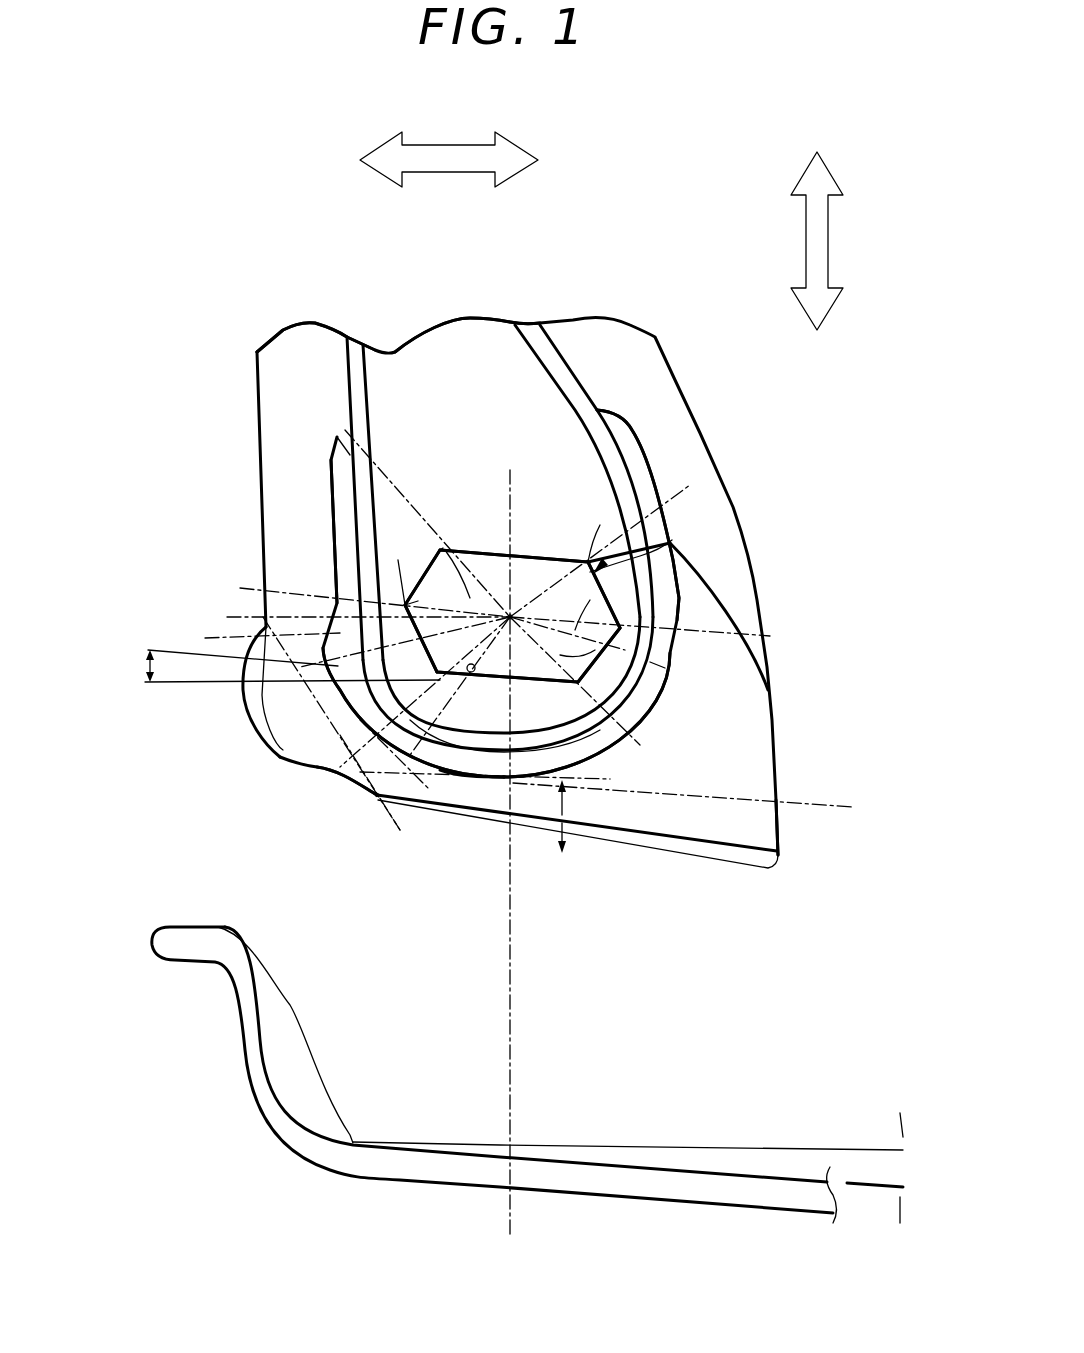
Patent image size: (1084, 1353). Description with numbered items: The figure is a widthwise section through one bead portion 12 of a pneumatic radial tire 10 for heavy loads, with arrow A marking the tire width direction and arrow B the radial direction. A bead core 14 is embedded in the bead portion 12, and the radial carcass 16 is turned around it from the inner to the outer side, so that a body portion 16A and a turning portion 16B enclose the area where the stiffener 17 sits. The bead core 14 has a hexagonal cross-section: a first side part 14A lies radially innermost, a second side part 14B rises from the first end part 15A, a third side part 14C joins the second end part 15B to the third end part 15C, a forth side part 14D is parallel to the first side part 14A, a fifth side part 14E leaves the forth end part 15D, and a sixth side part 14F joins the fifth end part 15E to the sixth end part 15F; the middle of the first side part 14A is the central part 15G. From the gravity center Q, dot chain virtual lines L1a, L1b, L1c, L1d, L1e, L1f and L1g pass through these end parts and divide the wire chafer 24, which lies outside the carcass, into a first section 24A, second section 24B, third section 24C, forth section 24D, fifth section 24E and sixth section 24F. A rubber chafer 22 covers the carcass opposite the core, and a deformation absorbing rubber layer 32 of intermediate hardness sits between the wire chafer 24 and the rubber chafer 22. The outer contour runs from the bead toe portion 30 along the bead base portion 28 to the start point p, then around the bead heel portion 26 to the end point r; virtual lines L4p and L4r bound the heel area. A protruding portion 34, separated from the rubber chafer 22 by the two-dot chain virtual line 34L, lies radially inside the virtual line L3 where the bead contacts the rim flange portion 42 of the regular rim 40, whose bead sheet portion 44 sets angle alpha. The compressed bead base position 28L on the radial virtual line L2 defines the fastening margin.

The pneumatic radial tire for heavy loads 10 is at (232, 306).
The bead portion 12 is at (315, 318).
The bead core 14 is at (558, 599).
The first side part 14A is at (508, 682).
The second side part 14B is at (425, 603).
The third side part 14C is at (438, 551).
The forth side part 14D is at (478, 548).
The fifth side part 14E is at (652, 690).
The sixth side part 14F is at (680, 548).
The first end part 15A is at (472, 558).
The second end part 15B is at (418, 601).
The third end part 15C is at (443, 546).
The forth end part 15D is at (580, 635).
The fifth end part 15E is at (660, 665).
The sixth end part 15F is at (590, 556).
The central part 15G is at (580, 660).
The radial carcass 16 is at (464, 497).
The body portion 16A is at (576, 392).
The turning portion 16B is at (358, 413).
The stiffener 17 is at (458, 362).
The rubber chafer 22 is at (342, 767).
The wire chafer 24 is at (508, 641).
The first section 24A is at (473, 777).
The second section 24B is at (365, 697).
The third section 24C is at (340, 483).
The forth section 24D is at (607, 738).
The fifth section 24E is at (770, 702).
The sixth section 24F is at (682, 598).
The bead heal portion 26 is at (282, 762).
The bead base portion 28 is at (518, 835).
The bead base portion apparently compressed 28L is at (813, 803).
The bead toe portion 30 is at (779, 858).
The deformation absorbing rubber layer 32 is at (430, 825).
The protruding portion 34 is at (245, 722).
The virtual line 34L is at (246, 633).
The regular rim 40 is at (487, 1042).
The rim flange portion 42 is at (305, 1026).
The bead sheet portion 44 is at (722, 1149).
The arrow A is at (445, 147).
The arrow B is at (806, 245).
The gravity center Q is at (545, 565).
The start point p is at (380, 795).
The end point r is at (250, 672).
The virtual line L2 is at (510, 485).
The virtual line L3 is at (240, 612).
The virtual line L1a is at (422, 733).
The virtual line L1b is at (318, 590).
The virtual line L1c is at (392, 462).
The virtual line L1d is at (645, 735).
The virtual line L1e is at (740, 622).
The virtual line L1f is at (690, 490).
The virtual line L1g is at (491, 768).
The reference line through r L4r is at (298, 658).
The reference line through p L4p is at (363, 812).